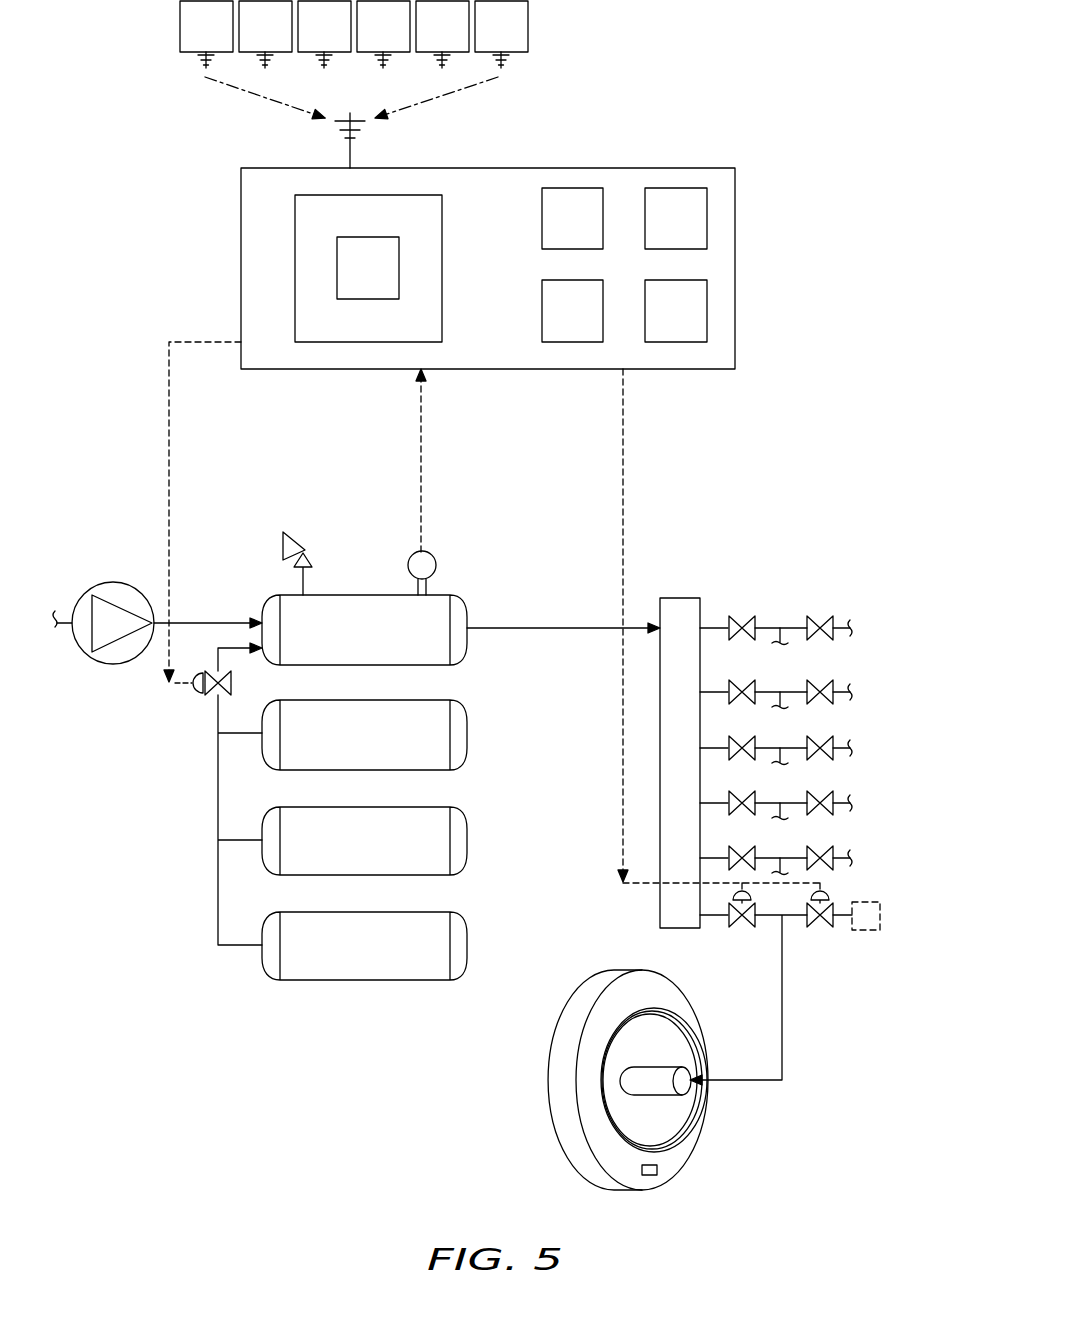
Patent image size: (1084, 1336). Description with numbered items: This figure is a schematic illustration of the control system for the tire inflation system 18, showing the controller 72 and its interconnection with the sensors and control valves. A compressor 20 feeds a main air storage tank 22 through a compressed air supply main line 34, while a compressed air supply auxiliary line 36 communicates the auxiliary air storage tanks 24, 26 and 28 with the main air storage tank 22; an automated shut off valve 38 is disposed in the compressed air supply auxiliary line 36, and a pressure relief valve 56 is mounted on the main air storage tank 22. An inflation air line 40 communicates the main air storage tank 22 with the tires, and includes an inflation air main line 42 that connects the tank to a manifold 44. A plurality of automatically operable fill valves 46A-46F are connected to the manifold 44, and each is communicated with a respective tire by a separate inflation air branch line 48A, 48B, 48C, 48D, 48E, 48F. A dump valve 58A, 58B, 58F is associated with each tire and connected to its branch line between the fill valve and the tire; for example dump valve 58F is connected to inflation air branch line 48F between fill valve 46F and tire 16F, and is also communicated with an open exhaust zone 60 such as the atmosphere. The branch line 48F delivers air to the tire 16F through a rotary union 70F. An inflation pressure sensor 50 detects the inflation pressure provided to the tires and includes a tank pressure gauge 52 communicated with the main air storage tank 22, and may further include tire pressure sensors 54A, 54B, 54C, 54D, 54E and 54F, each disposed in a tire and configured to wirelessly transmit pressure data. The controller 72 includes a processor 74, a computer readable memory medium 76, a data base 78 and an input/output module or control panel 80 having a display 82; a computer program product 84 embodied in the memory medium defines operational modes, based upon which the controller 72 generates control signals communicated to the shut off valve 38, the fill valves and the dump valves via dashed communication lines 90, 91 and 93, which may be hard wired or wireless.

The tire 16F is at (692, 1112).
The tire inflation system 18 is at (102, 185).
The compressor 20 is at (113, 664).
The main air storage tank 22 is at (364, 630).
The auxiliary air storage tank 24 is at (364, 735).
The auxiliary air storage tank 26 is at (364, 841).
The auxiliary air storage tank 28 is at (364, 946).
The compressed air supply main line 34 is at (185, 622).
The compressed air supply auxiliary line 36 is at (217, 787).
The automated shut off valve 38 is at (212, 697).
The inflation air line 40 is at (572, 622).
The inflation air main line 42 is at (500, 632).
The manifold 44 is at (680, 598).
The fill valve 46A is at (756, 625).
The fill valve 46F is at (740, 928).
The inflation air branch line 48A is at (776, 628).
The inflation air branch line 48B is at (770, 692).
The inflation air branch line 48C is at (770, 748).
The inflation air branch line 48D is at (770, 803).
The inflation air branch line 48E is at (770, 858).
The inflation air branch line 48F is at (782, 1048).
The inflation pressure sensor 50 is at (447, 570).
The tank pressure gauge 52 is at (436, 556).
The tire pressure sensor 54A is at (253, 62).
The tire pressure sensor 54B is at (265, 34).
The tire pressure sensor 54C is at (324, 34).
The tire pressure sensor 54D is at (383, 34).
The tire pressure sensor 54E is at (442, 34).
The tire pressure sensor 54F is at (703, 1198).
The pressure relief valve 56 is at (300, 535).
The dump valve 58A is at (822, 618).
The dump valve 58B is at (822, 680).
The dump valve 58F is at (820, 928).
The open exhaust zone 60 is at (882, 916).
The rotary union 70F is at (655, 1075).
The controller 72 is at (498, 168).
The processor 74 is at (572, 218).
The computer readable memory medium 76 is at (676, 218).
The data base 78 is at (572, 311).
The input/output module or control panel 80 is at (443, 222).
The display 82 is at (368, 237).
The computer program product 84 is at (676, 311).
The communication line 90 is at (170, 440).
The communication line 91 is at (422, 450).
The communication line 93 is at (624, 457).